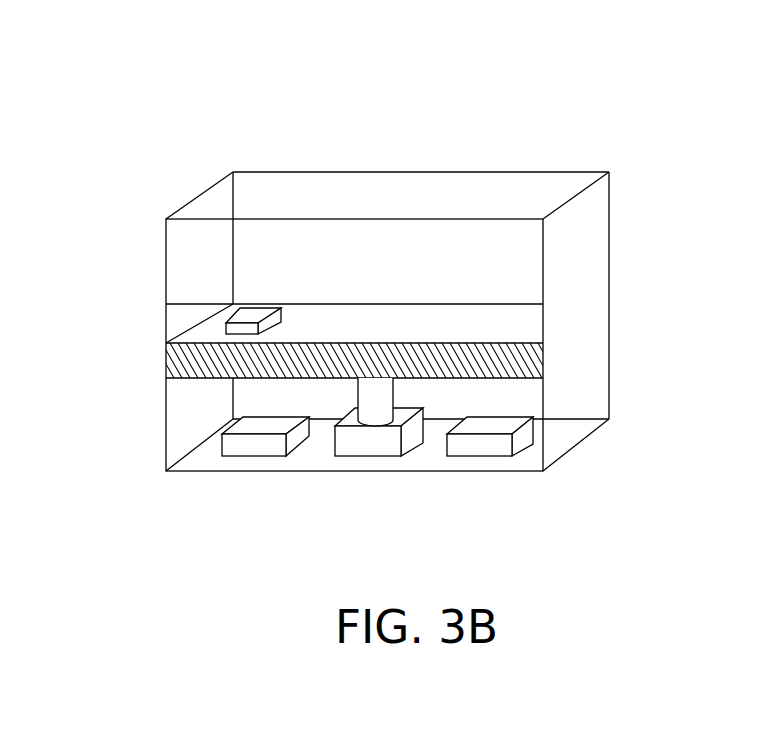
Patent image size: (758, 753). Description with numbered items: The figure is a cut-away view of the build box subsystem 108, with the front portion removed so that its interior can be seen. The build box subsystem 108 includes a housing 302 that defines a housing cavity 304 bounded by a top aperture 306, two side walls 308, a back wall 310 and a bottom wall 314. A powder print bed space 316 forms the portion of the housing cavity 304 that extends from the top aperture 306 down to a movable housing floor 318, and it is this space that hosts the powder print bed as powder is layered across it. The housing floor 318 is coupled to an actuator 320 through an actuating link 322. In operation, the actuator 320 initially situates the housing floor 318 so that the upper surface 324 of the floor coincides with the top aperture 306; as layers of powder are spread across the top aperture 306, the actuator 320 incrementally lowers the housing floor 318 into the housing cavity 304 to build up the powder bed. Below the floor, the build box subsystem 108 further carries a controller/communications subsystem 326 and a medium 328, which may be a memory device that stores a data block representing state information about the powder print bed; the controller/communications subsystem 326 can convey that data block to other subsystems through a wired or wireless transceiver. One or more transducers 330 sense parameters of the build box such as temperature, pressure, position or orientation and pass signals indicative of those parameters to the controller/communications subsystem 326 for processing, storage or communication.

The build box subsystem 108 is at (666, 470).
The housing 302 is at (611, 207).
The housing cavity 304 is at (434, 135).
The top aperture 306 is at (204, 190).
The side walls 308 is at (387, 358).
The back wall 310 is at (455, 248).
The bottom wall 314 is at (419, 462).
The powder print bed space 316 is at (366, 196).
The housing floor 318 is at (192, 358).
The actuator 320 is at (370, 444).
The actuating link 322 is at (372, 390).
The upper surface 324 is at (428, 330).
The controller/communications subsystem 326 is at (247, 447).
The medium 328 is at (485, 448).
The transducers 330 is at (237, 323).